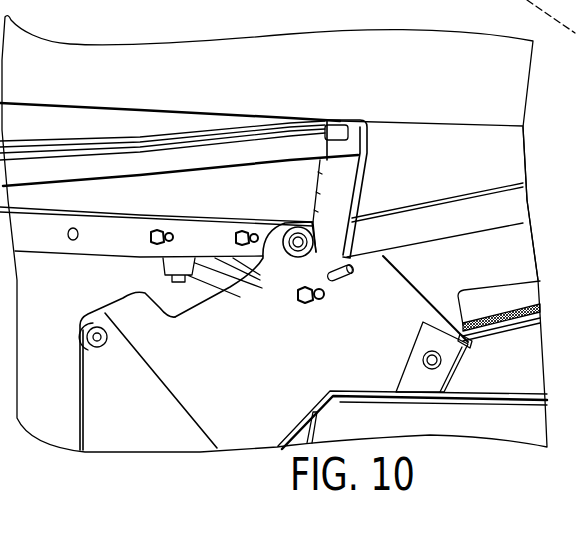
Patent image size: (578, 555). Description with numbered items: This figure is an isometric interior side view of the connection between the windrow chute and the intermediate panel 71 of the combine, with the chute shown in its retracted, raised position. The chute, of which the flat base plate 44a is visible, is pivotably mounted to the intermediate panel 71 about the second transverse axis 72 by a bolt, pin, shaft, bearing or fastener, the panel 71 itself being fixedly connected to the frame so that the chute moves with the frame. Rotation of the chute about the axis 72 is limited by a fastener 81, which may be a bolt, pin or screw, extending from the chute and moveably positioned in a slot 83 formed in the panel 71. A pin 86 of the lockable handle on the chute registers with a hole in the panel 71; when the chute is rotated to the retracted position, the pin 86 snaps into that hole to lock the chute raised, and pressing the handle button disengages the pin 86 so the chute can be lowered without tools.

The flat base plate 44a is at (450, 143).
The intermediate panel 71 is at (157, 425).
The second transverse axis 72 is at (282, 257).
The fastener 81 is at (299, 306).
The slot 83 is at (320, 300).
The pin 86 is at (353, 270).